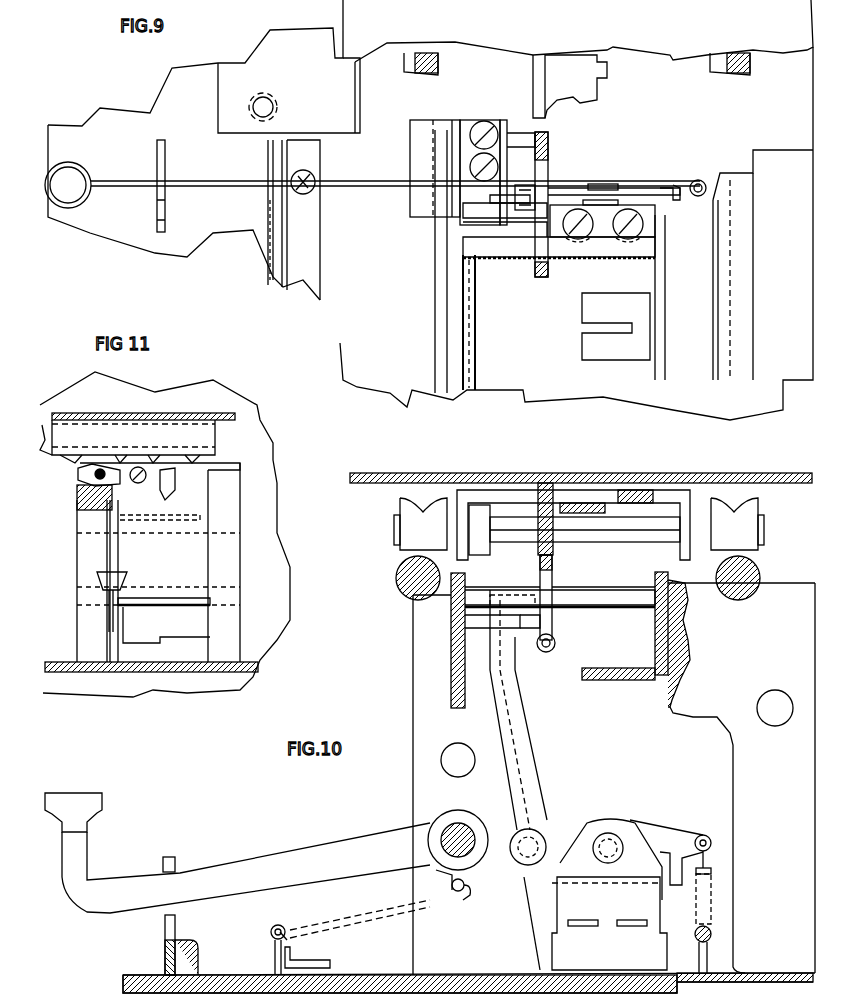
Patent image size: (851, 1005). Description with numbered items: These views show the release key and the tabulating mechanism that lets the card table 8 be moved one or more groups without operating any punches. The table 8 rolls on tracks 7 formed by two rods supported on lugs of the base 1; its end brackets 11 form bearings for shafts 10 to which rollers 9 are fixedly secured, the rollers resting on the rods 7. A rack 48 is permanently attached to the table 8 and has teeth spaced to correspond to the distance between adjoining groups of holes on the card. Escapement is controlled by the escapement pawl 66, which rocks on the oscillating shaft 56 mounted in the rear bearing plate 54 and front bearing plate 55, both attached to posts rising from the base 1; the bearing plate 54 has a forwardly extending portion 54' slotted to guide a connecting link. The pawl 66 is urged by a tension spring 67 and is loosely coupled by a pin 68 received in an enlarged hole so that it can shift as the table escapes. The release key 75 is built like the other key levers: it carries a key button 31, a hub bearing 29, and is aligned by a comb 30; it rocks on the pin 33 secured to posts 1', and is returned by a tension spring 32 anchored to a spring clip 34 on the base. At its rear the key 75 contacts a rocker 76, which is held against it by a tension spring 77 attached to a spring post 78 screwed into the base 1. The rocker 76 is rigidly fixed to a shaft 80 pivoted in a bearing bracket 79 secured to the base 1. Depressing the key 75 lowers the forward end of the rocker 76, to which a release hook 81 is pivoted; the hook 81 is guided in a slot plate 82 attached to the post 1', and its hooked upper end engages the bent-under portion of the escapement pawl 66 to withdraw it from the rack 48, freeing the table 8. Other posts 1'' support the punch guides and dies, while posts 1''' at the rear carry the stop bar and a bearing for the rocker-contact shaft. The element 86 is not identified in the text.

In FIG. 11, the base 1 is at (151, 658).
In FIG. 10, the base 1 is at (469, 989).
In FIG. 9, the lug 1' is at (416, 256).
In FIG. 11, the lug 1' is at (156, 560).
In FIG. 10, the lug 1' is at (399, 772).
In FIG. 9, the lug 1'' is at (202, 88).
In FIG. 9, the post 1''' is at (763, 262).
In FIG. 10, the post 1''' is at (717, 746).
In FIG. 9, the tracks 7 is at (438, 63).
In FIG. 10, the tracks 7 is at (405, 584).
In FIG. 9, the card table 8 is at (649, 45).
In FIG. 11, the card table 8 is at (196, 413).
In FIG. 10, the card table 8 is at (597, 474).
In FIG. 10, the rollers 9 is at (399, 508).
In FIG. 10, the shafts 10 is at (641, 530).
In FIG. 10, the end brackets 11 is at (668, 495).
In FIG. 9, the hub bearing 29 is at (436, 298).
In FIG. 10, the hub bearing 29 is at (420, 822).
In FIG. 9, the comb 30 is at (157, 148).
In FIG. 10, the comb 30 is at (165, 931).
In FIG. 9, the key button 31 is at (84, 166).
In FIG. 11, the key button 31 is at (97, 579).
In FIG. 10, the key button 31 is at (100, 793).
In FIG. 10, the tension spring 32 is at (358, 928).
In FIG. 11, the pin 33 is at (177, 596).
In FIG. 10, the pin 33 is at (463, 826).
In FIG. 9, the spring clip 34 is at (270, 201).
In FIG. 10, the spring clip 34 is at (272, 951).
In FIG. 9, the rack 48 is at (532, 71).
In FIG. 11, the rack 48 is at (208, 441).
In FIG. 10, the rack 48 is at (538, 497).
In FIG. 9, the bearing plate 54 is at (681, 297).
In FIG. 11, the bearing plate 54 is at (181, 486).
In FIG. 10, the bearing plate 54 is at (689, 639).
In FIG. 9, the forwardly extending portion of bearing plate 54' is at (595, 326).
In FIG. 10, the forwardly extending portion of bearing plate 54' is at (618, 690).
In FIG. 11, the bearing plate 55 is at (225, 464).
In FIG. 10, the bearing plate 55 is at (451, 675).
In FIG. 9, the oscillating shaft 56 is at (604, 252).
In FIG. 11, the oscillating shaft 56 is at (143, 469).
In FIG. 10, the oscillating shaft 56 is at (619, 608).
In FIG. 9, the escapement pawl 66 is at (548, 173).
In FIG. 11, the escapement pawl 66 is at (78, 473).
In FIG. 10, the escapement pawl 66 is at (549, 586).
In FIG. 11, the tension spring 67 is at (132, 517).
In FIG. 11, the pin 68 is at (102, 468).
In FIG. 9, the release key 75 is at (206, 180).
In FIG. 11, the release key 75 is at (108, 620).
In FIG. 10, the release key 75 is at (293, 853).
In FIG. 9, the rocker 76 is at (668, 185).
In FIG. 10, the rocker 76 is at (680, 838).
In FIG. 9, the tension spring 77 is at (698, 180).
In FIG. 10, the tension spring 77 is at (713, 897).
In FIG. 10, the spring post 78 is at (708, 962).
In FIG. 9, the bearing bracket 79 is at (578, 195).
In FIG. 11, the bearing bracket 79 is at (134, 641).
In FIG. 10, the bearing bracket 79 is at (558, 904).
In FIG. 9, the shaft 80 is at (622, 200).
In FIG. 10, the shaft 80 is at (611, 832).
In FIG. 9, the release hook 81 is at (494, 204).
In FIG. 11, the release hook 81 is at (123, 568).
In FIG. 10, the release hook 81 is at (527, 771).
In FIG. 9, the slot plate 82 is at (503, 120).
In FIG. 11, the slot plate 82 is at (77, 498).
In FIG. 10, the slot plate 82 is at (484, 630).
In FIG. 10, the pad 86 is at (607, 505).